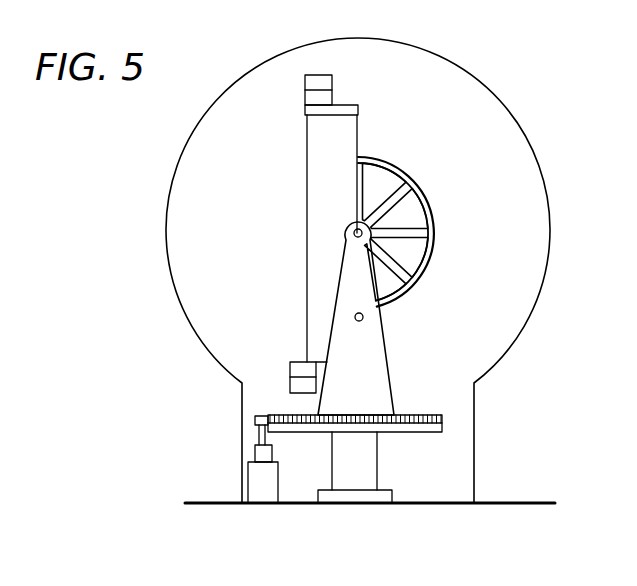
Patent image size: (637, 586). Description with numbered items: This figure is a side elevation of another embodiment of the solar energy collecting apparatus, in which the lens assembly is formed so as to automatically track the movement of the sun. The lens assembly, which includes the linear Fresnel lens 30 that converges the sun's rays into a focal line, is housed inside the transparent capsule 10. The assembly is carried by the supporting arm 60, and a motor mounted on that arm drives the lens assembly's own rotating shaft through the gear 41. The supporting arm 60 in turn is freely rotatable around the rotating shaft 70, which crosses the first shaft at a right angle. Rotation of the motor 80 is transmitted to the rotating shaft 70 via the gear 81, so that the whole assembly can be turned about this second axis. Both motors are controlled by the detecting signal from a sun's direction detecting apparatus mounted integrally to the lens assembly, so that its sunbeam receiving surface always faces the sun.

The transparent capsule 10 is at (447, 62).
The linear Fresnel lens 30 is at (330, 98).
The gear 41 is at (428, 200).
The supporting arm 60 is at (376, 345).
The rotating shaft 70 is at (376, 455).
The motor 80 is at (262, 497).
The gear 81 is at (292, 415).